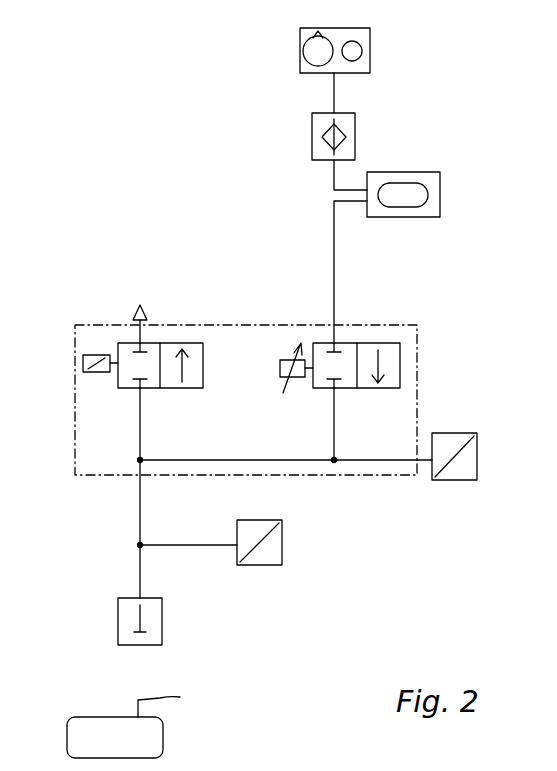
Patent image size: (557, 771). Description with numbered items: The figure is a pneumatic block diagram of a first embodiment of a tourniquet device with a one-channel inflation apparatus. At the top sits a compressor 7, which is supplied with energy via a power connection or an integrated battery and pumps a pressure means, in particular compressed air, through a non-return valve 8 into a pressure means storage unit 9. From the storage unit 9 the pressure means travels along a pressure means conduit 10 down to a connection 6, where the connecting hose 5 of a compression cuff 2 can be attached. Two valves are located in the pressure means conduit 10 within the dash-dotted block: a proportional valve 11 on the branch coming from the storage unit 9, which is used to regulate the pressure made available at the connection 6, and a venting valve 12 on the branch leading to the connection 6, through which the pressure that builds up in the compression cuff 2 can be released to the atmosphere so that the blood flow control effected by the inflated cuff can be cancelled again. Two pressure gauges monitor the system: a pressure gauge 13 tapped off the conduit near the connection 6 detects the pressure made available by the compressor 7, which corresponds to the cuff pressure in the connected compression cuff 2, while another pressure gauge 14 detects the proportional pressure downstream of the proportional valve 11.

The compression cuff 2 is at (121, 748).
The connecting hose 5 is at (169, 698).
The connection 6 is at (118, 626).
The compressor 7 is at (370, 38).
The non-return valve 8 is at (355, 135).
The pressure means storage unit 9 is at (440, 185).
The pressure means conduit 10 is at (334, 273).
The proportional valve 11 is at (400, 352).
The venting valve 12 is at (180, 343).
The pressure gauge 13 is at (268, 565).
The pressure gauge 14 is at (477, 447).